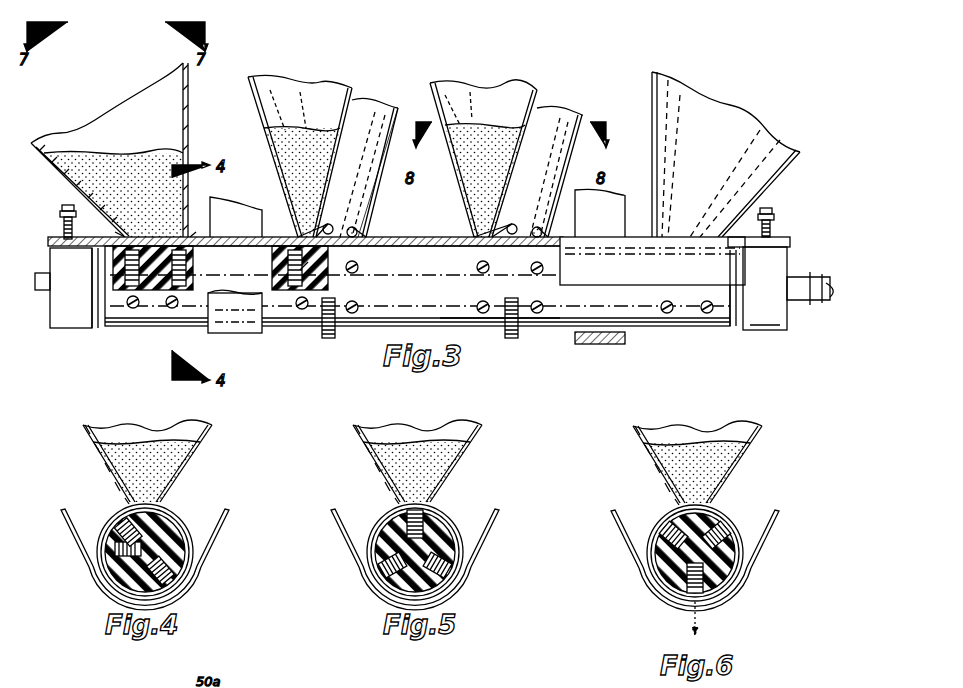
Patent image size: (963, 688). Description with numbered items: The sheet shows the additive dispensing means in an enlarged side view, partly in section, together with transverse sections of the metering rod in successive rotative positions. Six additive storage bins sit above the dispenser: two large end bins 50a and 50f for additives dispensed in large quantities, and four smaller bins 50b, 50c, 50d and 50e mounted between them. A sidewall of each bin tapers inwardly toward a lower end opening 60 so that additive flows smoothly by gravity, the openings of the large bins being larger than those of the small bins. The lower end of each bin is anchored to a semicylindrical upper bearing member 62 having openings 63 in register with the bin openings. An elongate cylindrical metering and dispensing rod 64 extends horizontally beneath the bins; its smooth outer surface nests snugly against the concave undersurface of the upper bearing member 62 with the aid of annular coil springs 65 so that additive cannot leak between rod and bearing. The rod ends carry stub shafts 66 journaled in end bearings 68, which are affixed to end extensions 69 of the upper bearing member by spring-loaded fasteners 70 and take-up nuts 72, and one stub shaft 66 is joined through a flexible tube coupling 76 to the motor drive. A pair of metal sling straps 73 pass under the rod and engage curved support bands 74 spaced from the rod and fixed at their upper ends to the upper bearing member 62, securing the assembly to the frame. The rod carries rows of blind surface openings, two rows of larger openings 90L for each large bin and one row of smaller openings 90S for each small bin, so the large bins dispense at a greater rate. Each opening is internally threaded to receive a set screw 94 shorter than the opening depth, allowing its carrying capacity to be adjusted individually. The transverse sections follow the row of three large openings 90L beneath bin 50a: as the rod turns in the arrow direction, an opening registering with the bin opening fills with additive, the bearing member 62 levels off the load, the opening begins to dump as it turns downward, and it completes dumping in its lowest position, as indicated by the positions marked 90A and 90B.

In FIG. 3, the large end bin 50a is at (105, 116).
In FIG. 4, the large end bin 50a is at (198, 453).
In FIG. 5, the large end bin 50a is at (466, 453).
In FIG. 6, the large end bin 50a is at (748, 453).
In FIG. 3, the smaller bin 50b is at (310, 90).
In FIG. 3, the smaller bin 50c is at (368, 107).
In FIG. 3, the smaller bin 50d is at (488, 90).
In FIG. 3, the smaller bin 50e is at (556, 120).
In FIG. 3, the large end bin 50f is at (652, 98).
In FIG. 3, the lower end opening 60 is at (75, 222).
In FIG. 4, the lower end opening 60 is at (152, 502).
In FIG. 5, the lower end opening 60 is at (430, 504).
In FIG. 6, the lower end opening 60 is at (718, 500).
In FIG. 3, the upper bearing member 62 is at (390, 237).
In FIG. 4, the upper bearing member 62 is at (108, 512).
In FIG. 5, the upper bearing member 62 is at (385, 513).
In FIG. 6, the upper bearing member 62 is at (660, 512).
In FIG. 3, the openings 63 is at (115, 232).
In FIG. 6, the openings 63 is at (716, 512).
In FIG. 3, the metering and dispensing rod 64 is at (478, 320).
In FIG. 4, the metering and dispensing rod 64 is at (196, 566).
In FIG. 3, the annular coil springs 65 is at (328, 338).
In FIG. 3, the stub shafts 66 is at (798, 276).
In FIG. 3, the end bearings 68 is at (762, 330).
In FIG. 3, the end extensions 69 is at (790, 241).
In FIG. 3, the spring-loaded fasteners 70 is at (768, 208).
In FIG. 3, the take-up nuts 72 is at (777, 218).
In FIG. 3, the metal sling straps 73 is at (250, 333).
In FIG. 4, the metal sling straps 73 is at (72, 527).
In FIG. 5, the metal sling straps 73 is at (348, 540).
In FIG. 6, the metal sling straps 73 is at (636, 560).
In FIG. 3, the curved support bands 74 is at (583, 345).
In FIG. 4, the curved support bands 74 is at (97, 548).
In FIG. 5, the curved support bands 74 is at (368, 552).
In FIG. 6, the curved support bands 74 is at (662, 580).
In FIG. 3, the flexible tube coupling 76 is at (822, 302).
In FIG. 3, the large rod openings 90L is at (195, 232).
In FIG. 4, the large rod openings 90L is at (108, 560).
In FIG. 3, the small rod openings 90S is at (306, 270).
In FIG. 6, the metering cavity A 90A is at (658, 545).
In FIG. 6, the metering cavity B 90B is at (684, 592).
In FIG. 3, the set screw 94 is at (270, 258).